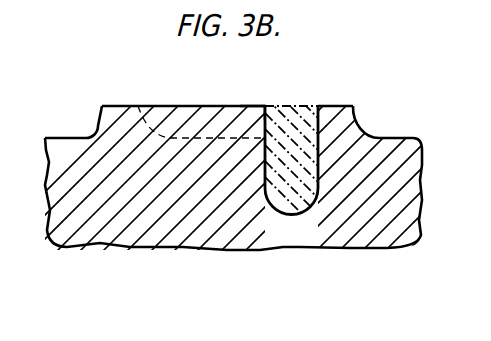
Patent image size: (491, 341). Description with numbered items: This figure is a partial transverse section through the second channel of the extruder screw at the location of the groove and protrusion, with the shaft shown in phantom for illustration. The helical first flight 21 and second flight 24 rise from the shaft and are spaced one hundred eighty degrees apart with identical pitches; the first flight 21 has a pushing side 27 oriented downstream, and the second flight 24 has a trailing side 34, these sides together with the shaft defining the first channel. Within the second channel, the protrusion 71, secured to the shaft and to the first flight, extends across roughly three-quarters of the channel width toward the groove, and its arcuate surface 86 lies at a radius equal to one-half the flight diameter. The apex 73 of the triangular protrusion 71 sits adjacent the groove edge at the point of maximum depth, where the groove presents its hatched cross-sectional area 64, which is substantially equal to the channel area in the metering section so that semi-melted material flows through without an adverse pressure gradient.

The first flight 21 is at (122, 105).
The second flight 24 is at (333, 105).
The pushing side 27 is at (97, 128).
The trailing side 34 is at (357, 113).
The cross-sectional area 64 is at (266, 173).
The protrusion 71 is at (208, 116).
The apex 73 is at (272, 105).
The arcuate surface 86 is at (258, 105).